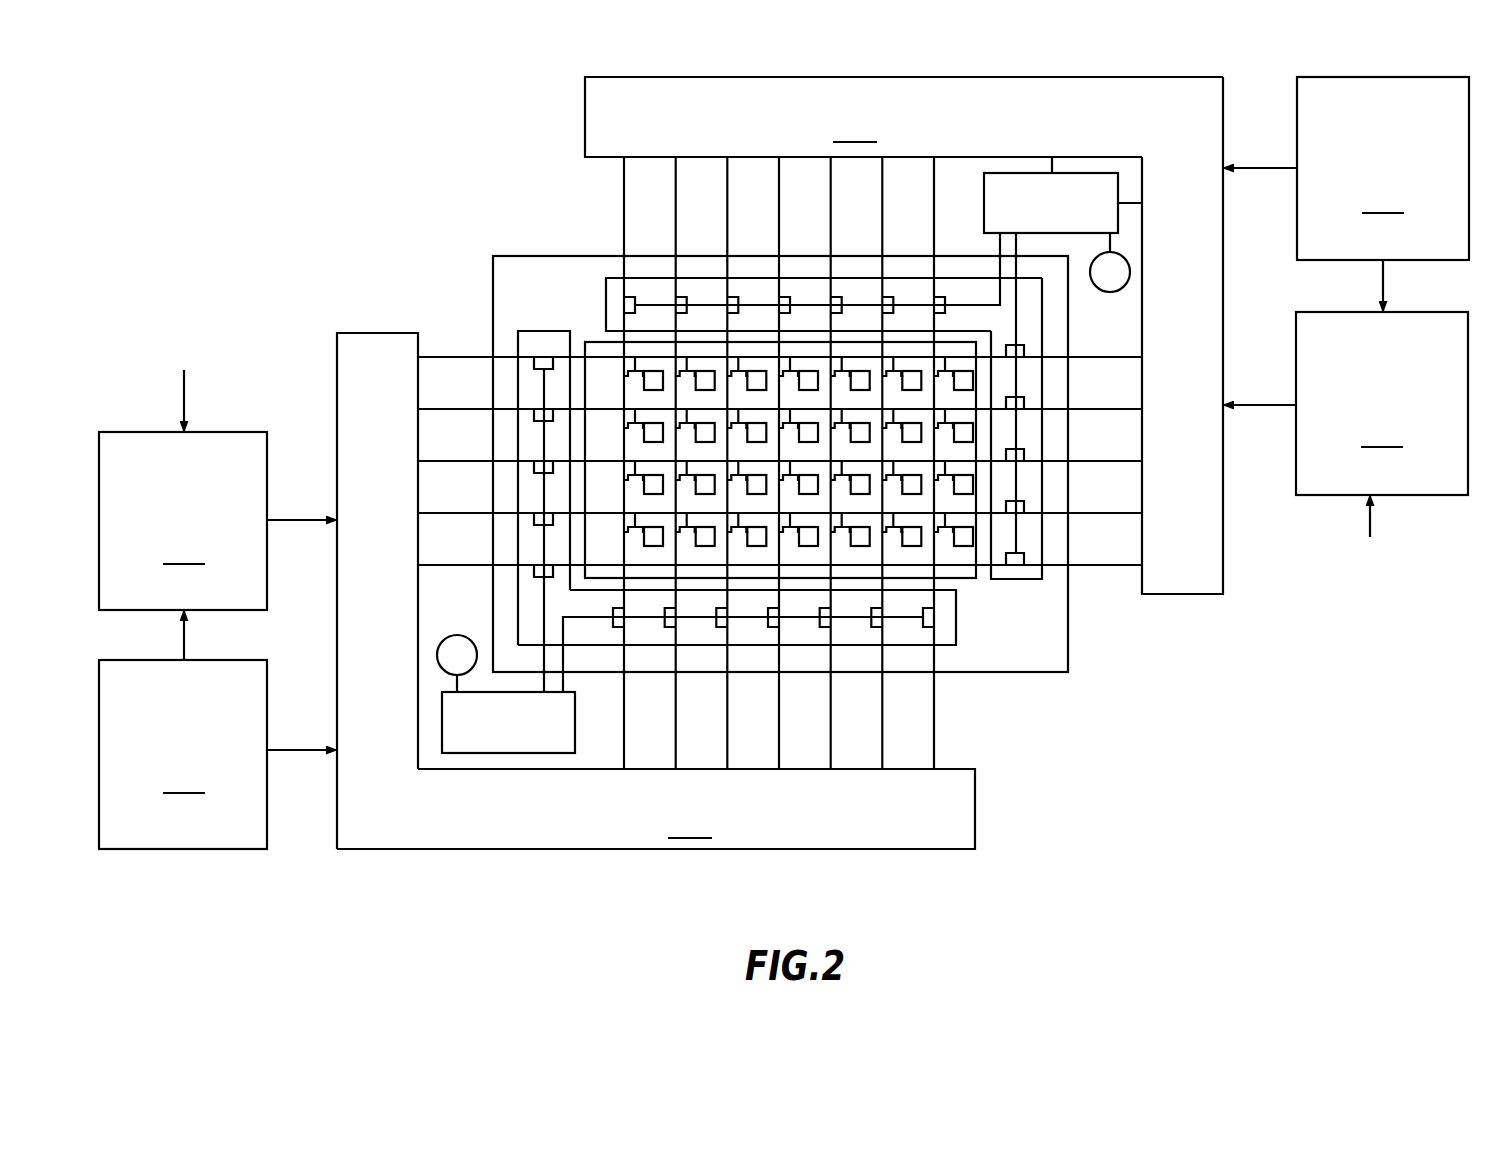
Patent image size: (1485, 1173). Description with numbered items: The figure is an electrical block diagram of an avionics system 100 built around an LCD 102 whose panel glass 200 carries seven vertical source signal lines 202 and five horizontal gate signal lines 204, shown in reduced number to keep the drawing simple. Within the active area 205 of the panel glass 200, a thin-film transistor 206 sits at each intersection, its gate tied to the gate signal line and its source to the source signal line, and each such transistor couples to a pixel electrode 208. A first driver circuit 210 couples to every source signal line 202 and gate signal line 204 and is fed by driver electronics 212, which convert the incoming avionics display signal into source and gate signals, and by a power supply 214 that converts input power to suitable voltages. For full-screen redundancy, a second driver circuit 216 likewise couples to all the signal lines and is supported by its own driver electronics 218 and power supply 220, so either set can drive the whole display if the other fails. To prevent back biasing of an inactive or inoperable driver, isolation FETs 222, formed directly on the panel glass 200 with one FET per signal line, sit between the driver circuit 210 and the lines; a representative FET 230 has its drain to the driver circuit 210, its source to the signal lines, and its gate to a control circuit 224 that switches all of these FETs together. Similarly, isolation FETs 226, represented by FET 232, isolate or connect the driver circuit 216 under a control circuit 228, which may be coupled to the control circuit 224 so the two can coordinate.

The avionics system 100 is at (273, 142).
The LCD 102 is at (764, 418).
The panel glass 200 is at (511, 268).
The source signal lines 202 is at (608, 178).
The gate signal lines 204 is at (466, 328).
The active area 205 is at (593, 332).
The transistor 206 is at (947, 537).
The pixel electrode 208 is at (964, 547).
The driver circuit 210 is at (904, 117).
The driver electronics 212 is at (1382, 403).
The power supply 214 is at (1383, 168).
The driver circuit 216 is at (656, 809).
The driver electronics 218 is at (183, 521).
The power supply 220 is at (183, 754).
The isolation FETs 222 is at (1043, 315).
The control circuit 224 is at (983, 196).
The isolation FETs 226 is at (517, 580).
The control circuit 228 is at (575, 732).
The FET 230 is at (629, 282).
The FET 232 is at (918, 632).